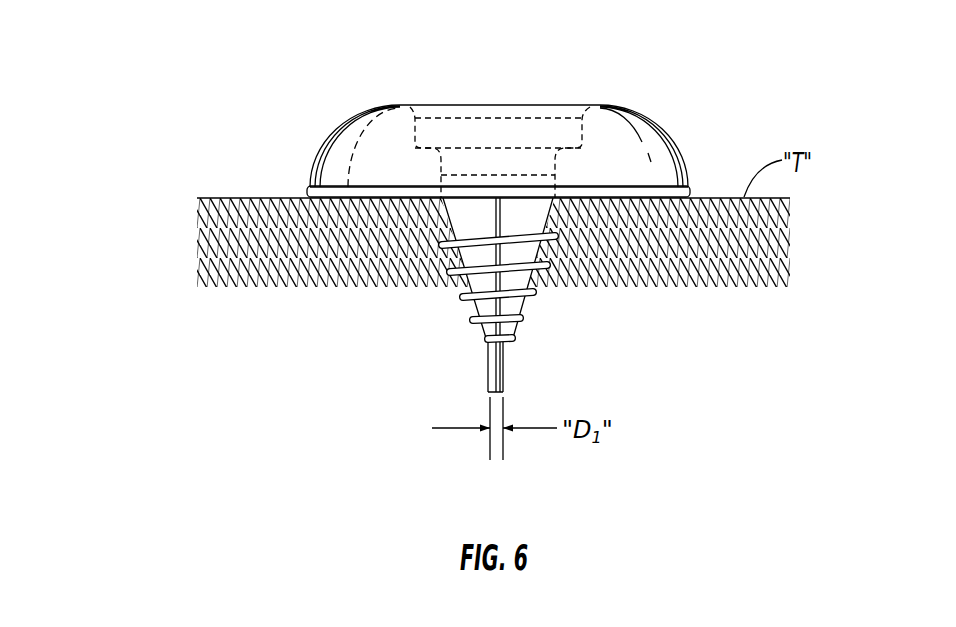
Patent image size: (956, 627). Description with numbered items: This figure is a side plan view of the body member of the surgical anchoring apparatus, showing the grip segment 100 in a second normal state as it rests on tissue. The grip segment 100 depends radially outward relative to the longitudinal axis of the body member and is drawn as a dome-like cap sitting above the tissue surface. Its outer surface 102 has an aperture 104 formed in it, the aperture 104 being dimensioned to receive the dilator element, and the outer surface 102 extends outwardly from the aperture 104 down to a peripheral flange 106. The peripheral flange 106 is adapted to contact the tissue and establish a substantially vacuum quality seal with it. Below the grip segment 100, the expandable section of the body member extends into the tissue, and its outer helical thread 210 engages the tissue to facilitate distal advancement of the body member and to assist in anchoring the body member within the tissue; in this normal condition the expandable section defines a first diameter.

The grip segment 100 is at (695, 138).
The outer surface 102 is at (657, 120).
The aperture 104 is at (562, 106).
The peripheral flange 106 is at (340, 197).
The outer helical thread 210 is at (533, 294).